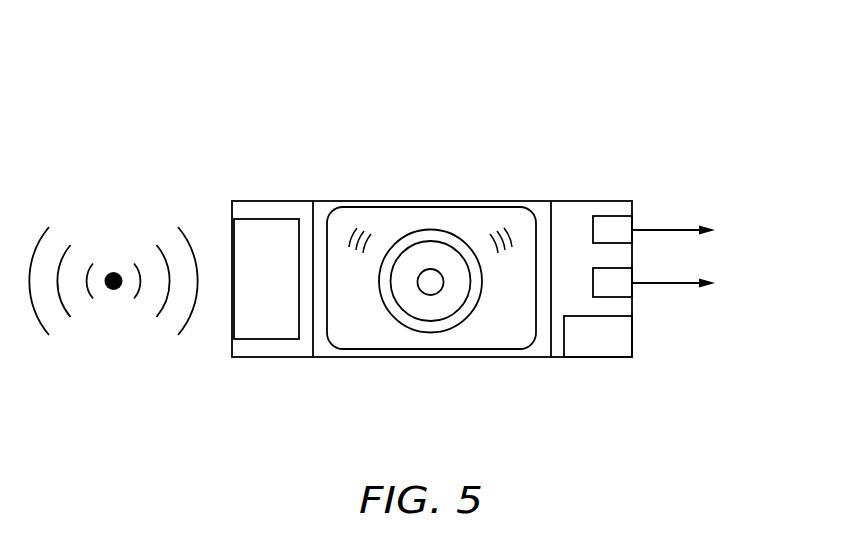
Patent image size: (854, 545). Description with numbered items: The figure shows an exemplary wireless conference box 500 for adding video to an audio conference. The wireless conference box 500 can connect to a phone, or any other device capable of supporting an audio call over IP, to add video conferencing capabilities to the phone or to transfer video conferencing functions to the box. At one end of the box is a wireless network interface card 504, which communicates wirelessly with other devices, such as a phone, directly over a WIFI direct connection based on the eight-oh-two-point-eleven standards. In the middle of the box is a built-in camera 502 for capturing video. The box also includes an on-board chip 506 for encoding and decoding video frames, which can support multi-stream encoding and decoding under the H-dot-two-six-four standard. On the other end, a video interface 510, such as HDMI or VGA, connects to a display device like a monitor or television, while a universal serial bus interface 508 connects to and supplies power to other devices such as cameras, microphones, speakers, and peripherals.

The wireless conference box 500 is at (318, 126).
The built-in camera 502 is at (437, 215).
The wireless network interface card 504 is at (263, 333).
The on-board chip 506 is at (600, 357).
The universal serial bus (USB) interface 508 is at (618, 289).
The video interface 510 is at (615, 222).